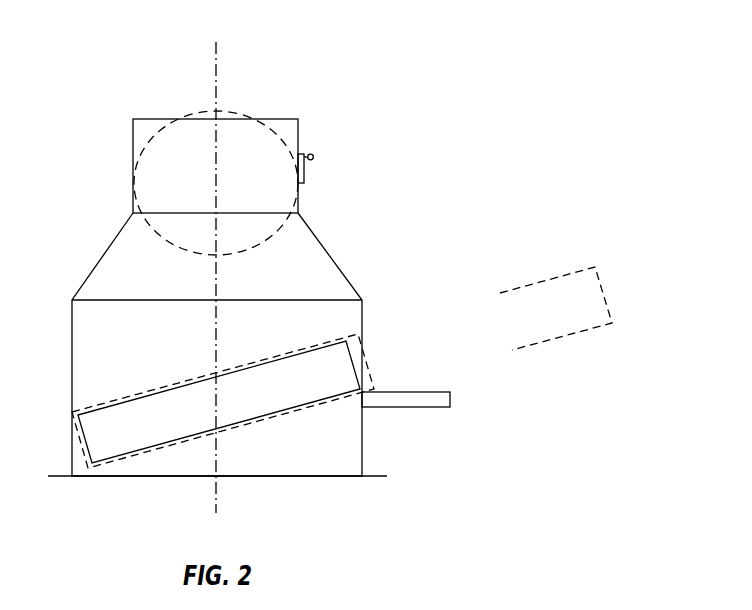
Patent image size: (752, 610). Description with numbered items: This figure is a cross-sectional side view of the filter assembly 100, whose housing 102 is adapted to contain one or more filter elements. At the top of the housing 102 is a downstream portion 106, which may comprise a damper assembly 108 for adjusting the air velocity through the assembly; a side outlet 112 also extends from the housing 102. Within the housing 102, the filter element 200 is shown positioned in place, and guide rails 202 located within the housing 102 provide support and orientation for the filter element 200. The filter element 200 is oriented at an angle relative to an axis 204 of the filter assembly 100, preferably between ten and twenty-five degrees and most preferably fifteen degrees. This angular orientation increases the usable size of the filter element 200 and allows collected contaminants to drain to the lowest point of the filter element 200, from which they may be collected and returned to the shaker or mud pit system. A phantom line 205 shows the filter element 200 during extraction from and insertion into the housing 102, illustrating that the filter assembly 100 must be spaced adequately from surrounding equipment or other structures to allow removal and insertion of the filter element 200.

The filter assembly 100 is at (434, 96).
The housing 102 is at (332, 257).
The downstream portion 106 is at (132, 147).
The damper assembly 108 is at (232, 115).
The outlet conduit 112 is at (428, 390).
The filter element 200 is at (125, 422).
The guide rails 202 is at (118, 400).
The axis 204 is at (213, 73).
The phantom line 205 is at (608, 305).